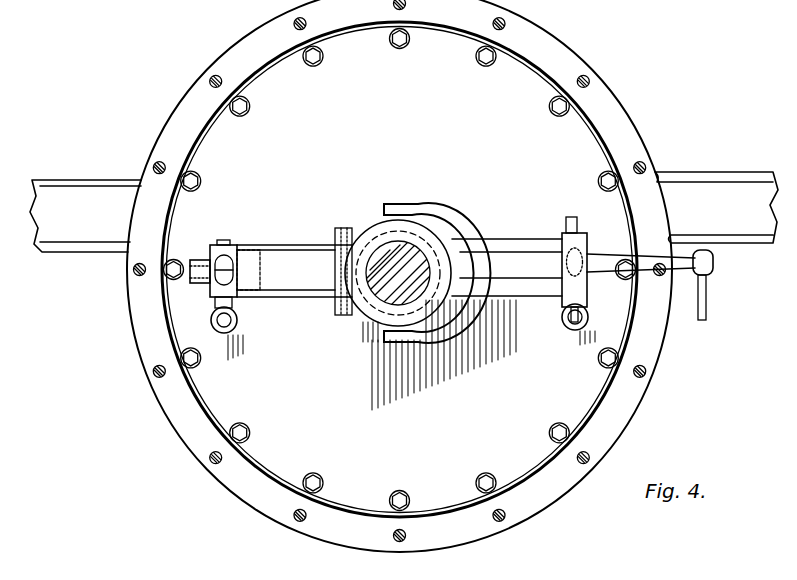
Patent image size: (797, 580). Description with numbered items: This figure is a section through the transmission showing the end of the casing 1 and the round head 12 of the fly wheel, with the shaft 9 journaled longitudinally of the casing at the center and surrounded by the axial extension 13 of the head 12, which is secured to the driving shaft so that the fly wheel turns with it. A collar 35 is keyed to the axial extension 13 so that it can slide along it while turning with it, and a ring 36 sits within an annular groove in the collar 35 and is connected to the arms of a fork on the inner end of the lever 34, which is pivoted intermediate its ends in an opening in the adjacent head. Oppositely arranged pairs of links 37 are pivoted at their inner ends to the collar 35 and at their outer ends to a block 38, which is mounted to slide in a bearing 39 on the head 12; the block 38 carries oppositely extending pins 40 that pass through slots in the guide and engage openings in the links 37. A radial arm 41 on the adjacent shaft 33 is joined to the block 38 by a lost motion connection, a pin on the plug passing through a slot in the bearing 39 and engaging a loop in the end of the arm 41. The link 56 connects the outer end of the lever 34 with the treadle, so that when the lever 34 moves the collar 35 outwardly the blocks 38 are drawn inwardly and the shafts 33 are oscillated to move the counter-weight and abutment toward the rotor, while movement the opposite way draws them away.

The casing 1 is at (172, 428).
The head 12 is at (399, 269).
The shaft 9 is at (440, 245).
The axial extension 13 is at (410, 240).
The collar 35 is at (372, 235).
The ring 36 is at (380, 226).
The lever 34 is at (497, 262).
The links 37 is at (538, 240).
The shafts 33 is at (572, 320).
The link 56 is at (708, 312).
The block 38 is at (200, 283).
The pins 40 is at (224, 240).
The bearing 39 is at (252, 255).
The radial arm 41 is at (236, 302).